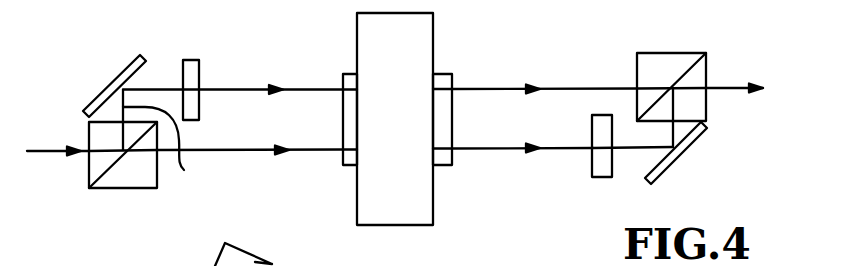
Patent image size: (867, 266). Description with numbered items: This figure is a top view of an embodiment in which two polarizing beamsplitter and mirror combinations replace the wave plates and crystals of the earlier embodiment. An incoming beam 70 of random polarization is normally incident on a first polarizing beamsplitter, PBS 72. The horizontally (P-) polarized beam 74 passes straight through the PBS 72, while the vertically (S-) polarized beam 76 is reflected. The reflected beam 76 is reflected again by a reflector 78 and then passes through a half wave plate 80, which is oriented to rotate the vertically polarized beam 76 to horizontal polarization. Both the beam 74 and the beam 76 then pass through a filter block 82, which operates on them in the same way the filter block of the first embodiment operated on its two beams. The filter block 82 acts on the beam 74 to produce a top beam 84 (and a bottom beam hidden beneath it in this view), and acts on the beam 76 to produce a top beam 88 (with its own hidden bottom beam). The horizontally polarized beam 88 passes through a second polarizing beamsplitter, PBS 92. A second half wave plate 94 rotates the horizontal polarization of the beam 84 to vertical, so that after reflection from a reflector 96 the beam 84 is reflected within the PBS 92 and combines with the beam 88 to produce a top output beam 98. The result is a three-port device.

The incoming beam 70 is at (56, 149).
The polarizing beamsplitter 72 is at (120, 188).
The horizontally polarized beam 74 is at (263, 152).
The vertically polarized beam 76 is at (184, 170).
The reflector 78 is at (125, 82).
The half wave plate 80 is at (199, 60).
The filter block 82 is at (433, 42).
The top beam 84 is at (483, 149).
The top beam 88 is at (555, 88).
The polarizing beamsplitter 92 is at (683, 53).
The half wave plate 94 is at (592, 168).
The reflector 96 is at (682, 148).
The top output beam 98 is at (728, 87).